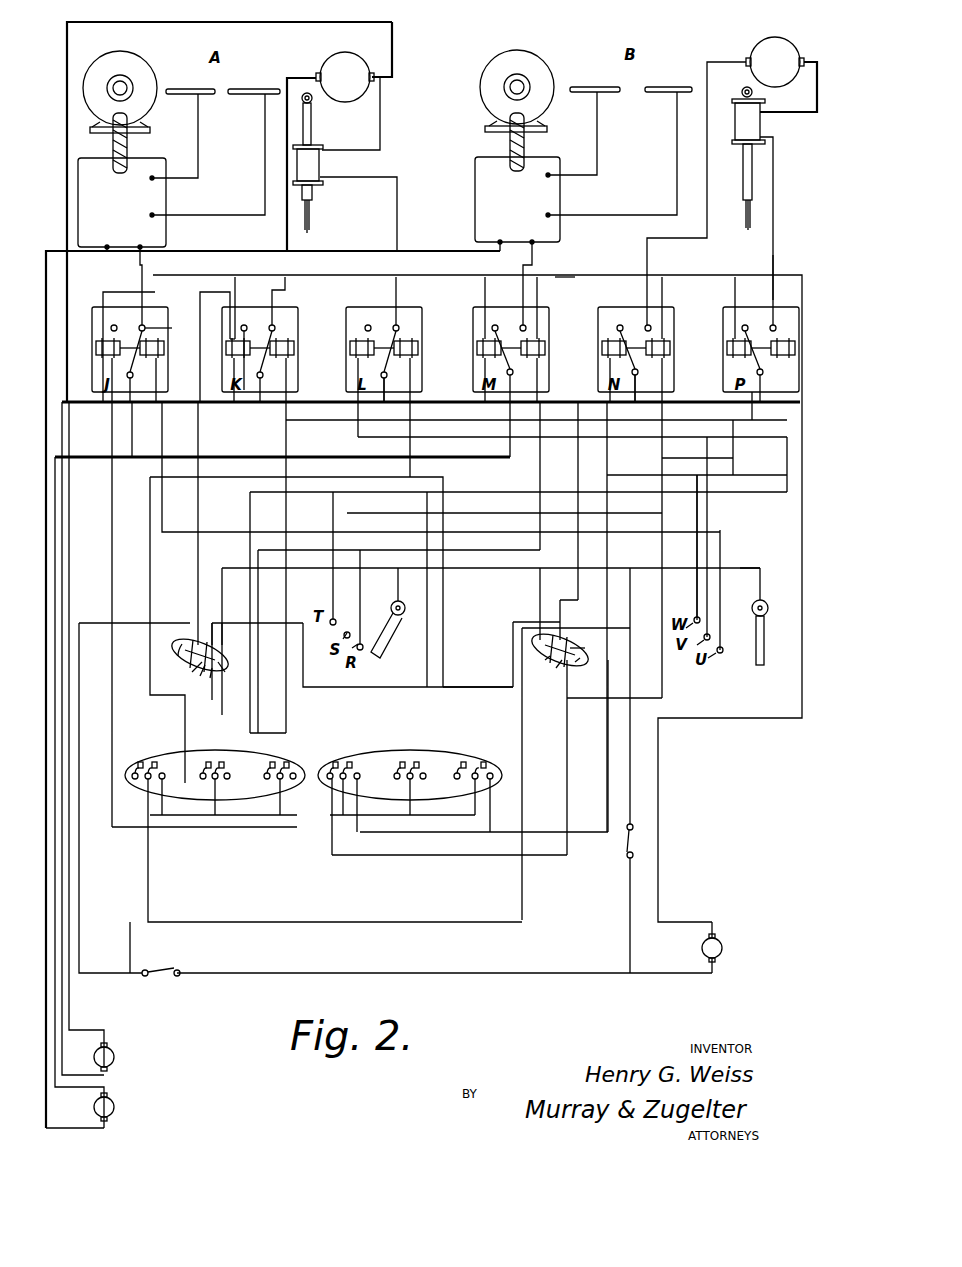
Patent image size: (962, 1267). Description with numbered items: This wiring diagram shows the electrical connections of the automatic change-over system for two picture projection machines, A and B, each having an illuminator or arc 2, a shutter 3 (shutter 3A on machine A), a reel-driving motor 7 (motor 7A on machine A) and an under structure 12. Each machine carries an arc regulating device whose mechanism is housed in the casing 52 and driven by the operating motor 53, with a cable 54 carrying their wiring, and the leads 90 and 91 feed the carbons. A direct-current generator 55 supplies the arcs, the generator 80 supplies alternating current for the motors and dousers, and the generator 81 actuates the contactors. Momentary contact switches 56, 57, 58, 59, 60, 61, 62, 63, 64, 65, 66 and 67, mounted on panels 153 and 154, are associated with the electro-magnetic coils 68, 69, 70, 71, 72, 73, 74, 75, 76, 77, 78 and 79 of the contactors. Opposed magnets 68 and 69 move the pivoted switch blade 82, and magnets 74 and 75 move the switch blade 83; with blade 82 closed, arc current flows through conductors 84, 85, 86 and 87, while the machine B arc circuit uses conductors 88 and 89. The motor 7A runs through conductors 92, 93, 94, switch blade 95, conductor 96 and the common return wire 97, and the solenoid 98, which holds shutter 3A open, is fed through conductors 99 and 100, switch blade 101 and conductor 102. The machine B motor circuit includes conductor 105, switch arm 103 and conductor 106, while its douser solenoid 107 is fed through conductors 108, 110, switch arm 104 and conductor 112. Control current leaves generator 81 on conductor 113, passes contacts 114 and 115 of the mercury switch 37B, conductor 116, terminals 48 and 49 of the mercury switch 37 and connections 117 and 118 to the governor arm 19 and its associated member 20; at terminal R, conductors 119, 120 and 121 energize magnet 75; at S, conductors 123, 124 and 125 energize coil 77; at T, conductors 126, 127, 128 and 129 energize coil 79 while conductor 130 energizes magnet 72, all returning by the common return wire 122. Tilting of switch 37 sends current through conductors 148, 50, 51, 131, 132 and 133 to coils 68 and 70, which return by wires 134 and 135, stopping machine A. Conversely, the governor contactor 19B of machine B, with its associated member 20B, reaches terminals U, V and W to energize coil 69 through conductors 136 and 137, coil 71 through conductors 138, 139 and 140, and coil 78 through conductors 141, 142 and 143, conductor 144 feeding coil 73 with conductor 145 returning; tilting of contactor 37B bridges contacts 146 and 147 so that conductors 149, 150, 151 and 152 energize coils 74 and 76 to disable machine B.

The illuminator or arc 2 is at (429, 82).
The shutter 3 is at (747, 220).
The shutter of machine A 3A is at (311, 216).
The motor 7 is at (789, 81).
The motor of machine A 7A is at (349, 102).
The under structure 12 is at (200, 655).
The governor arm 19 is at (386, 639).
The governor contactor 19B is at (764, 665).
The pivot knob 20 is at (403, 613).
The pivot knob 20B is at (768, 603).
The mercury switch 37 is at (192, 677).
The mercury contactor 37B is at (567, 666).
The terminal of switch 37 48 is at (208, 683).
The terminal of switch 37 49 is at (228, 675).
The conductor 50 is at (182, 645).
The conductor 51 is at (192, 668).
The casing of arc regulating device 52 is at (96, 158).
The operating motor of arc regulating device 53 is at (152, 107).
The cable 54 is at (128, 147).
The generator 55 is at (115, 1107).
The momentary contact switch 56 is at (141, 762).
The momentary contact switch 57 is at (152, 768).
The momentary contact switch 58 is at (208, 762).
The momentary contact switch 59 is at (217, 768).
The momentary contact switch 60 is at (271, 762).
The momentary contact switch 61 is at (289, 765).
The momentary contact switch 62 is at (336, 762).
The momentary contact switch 63 is at (347, 768).
The momentary contact switch 64 is at (402, 762).
The momentary contact switch 65 is at (413, 768).
The momentary contact switch 66 is at (464, 762).
The momentary contact switch 67 is at (486, 766).
The electro-magnet of contactor J 68 is at (96, 357).
The electro-magnet of contactor J 69 is at (165, 348).
The electro-magnet of contactor K 70 is at (226, 348).
The coil of contactor K 71 is at (294, 345).
The electro-magnet of contactor L 72 is at (350, 349).
The coil of contactor L 73 is at (418, 348).
The electro-magnet of contactor M 74 is at (477, 349).
The electro-magnet of contactor M 75 is at (545, 345).
The coil of contactor N 76 is at (602, 348).
The electro-magnet of contactor N 77 is at (670, 344).
The coil of contactor P 78 is at (727, 349).
The electro-magnet of contactor P 79 is at (796, 347).
The generator 80 is at (115, 1057).
The generator 81 is at (723, 948).
The switch blade of contactor J 82 is at (137, 327).
The switch blade of contactor M 83 is at (497, 326).
The conductor 84 is at (220, 457).
The conductor 85 is at (132, 430).
The conductor 86 is at (148, 265).
The conductor 87 is at (72, 1140).
The conductor 88 is at (510, 437).
The conductor 89 is at (534, 258).
The lead 90 is at (264, 140).
The lead 91 is at (677, 140).
The conductor 92 is at (163, 23).
The conductor 93 is at (393, 58).
The conductor 94 is at (300, 78).
The switch blade of contactor K 95 is at (269, 329).
The conductor 96 is at (255, 397).
The common return wire 97 is at (208, 403).
The solenoid 98 is at (321, 165).
The conductor 99 is at (381, 117).
The conductor 100 is at (397, 240).
The switch blade of contactor L 101 is at (394, 326).
The conductor 102 is at (386, 398).
The switch arm of contactor N 103 is at (622, 325).
The switch arm of contactor P 104 is at (748, 325).
The conductor 105 is at (725, 62).
The conductor 106 is at (638, 398).
The solenoid 107 is at (762, 122).
The conductor 108 is at (788, 87).
The conductor 110 is at (775, 193).
The conductor 112 is at (754, 400).
The conductor 113 is at (630, 878).
The contact of switch 37B 114 is at (581, 664).
The contact of switch 37B 115 is at (586, 648).
The conductor 116 is at (223, 646).
The contactor conductor 117 is at (223, 607).
The contactor conductor 118 is at (396, 600).
The conductor 119 is at (361, 585).
The conductor 120 is at (540, 393).
The conductor 121 is at (540, 296).
The common return wire 122 is at (212, 278).
The conductor 123 is at (654, 516).
The conductor 124 is at (662, 458).
The conductor 125 is at (664, 291).
The conductor 126 is at (333, 594).
The conductor 127 is at (354, 494).
The conductor 128 is at (787, 436).
The conductor 129 is at (777, 280).
The conductor 130 is at (736, 442).
The conductor 131 is at (198, 563).
The conductor 132 is at (197, 292).
The conductor 133 is at (213, 314).
The wire 134 is at (103, 295).
The wire 135 is at (236, 286).
The conductor 136 is at (162, 514).
The conductor 137 is at (172, 327).
The conductor 138 is at (656, 421).
The conductor 139 is at (290, 396).
The conductor 140 is at (287, 293).
The conductor 141 is at (696, 610).
The conductor 142 is at (745, 472).
The conductor 143 is at (735, 294).
The conductor 144 is at (420, 476).
The conductor 145 is at (398, 297).
The contact of contactor 37B 146 is at (549, 662).
The contact of contactor 37B 147 is at (557, 672).
The conductor 148 is at (80, 674).
The conductor 149 is at (131, 940).
The conductor 150 is at (568, 610).
The conductor 151 is at (569, 280).
The conductor 152 is at (572, 308).
The panel 153 is at (136, 800).
The panel 154 is at (326, 796).